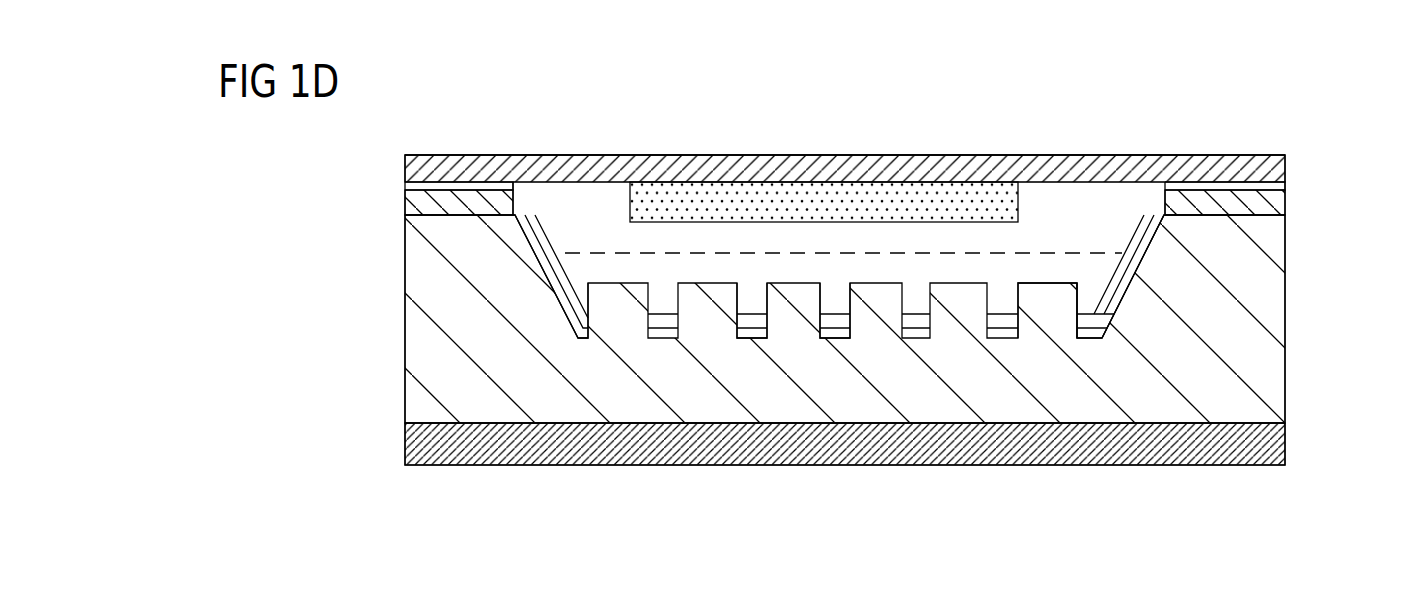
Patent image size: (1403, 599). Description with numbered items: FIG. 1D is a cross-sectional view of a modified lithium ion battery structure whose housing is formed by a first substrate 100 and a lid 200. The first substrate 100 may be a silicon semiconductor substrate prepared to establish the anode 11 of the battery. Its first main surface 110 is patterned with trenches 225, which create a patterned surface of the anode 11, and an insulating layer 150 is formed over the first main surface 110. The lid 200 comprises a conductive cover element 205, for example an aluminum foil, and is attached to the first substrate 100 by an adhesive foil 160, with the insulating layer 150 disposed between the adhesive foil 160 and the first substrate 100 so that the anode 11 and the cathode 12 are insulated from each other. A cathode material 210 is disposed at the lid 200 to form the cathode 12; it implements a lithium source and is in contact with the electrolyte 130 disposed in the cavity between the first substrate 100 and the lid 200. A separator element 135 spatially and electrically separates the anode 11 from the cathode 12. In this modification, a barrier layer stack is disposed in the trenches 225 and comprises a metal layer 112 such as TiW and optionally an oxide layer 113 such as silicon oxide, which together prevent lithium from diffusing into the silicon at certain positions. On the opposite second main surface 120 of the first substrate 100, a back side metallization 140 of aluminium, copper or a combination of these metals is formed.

The anode 11 is at (1137, 280).
The cathode 12 is at (1032, 183).
The first substrate 100 is at (1285, 313).
The first main surface 110 is at (1267, 215).
The metal layer 112 is at (665, 333).
The oxide layer 113 is at (652, 322).
The second main surface 120 is at (1267, 423).
The electrolyte 130 is at (751, 302).
The separator element 135 is at (1047, 255).
The back side metallization 140 is at (1270, 447).
The insulating layer 150 is at (1285, 208).
The adhesive foil 160 is at (1285, 182).
The lid 200 is at (1285, 158).
The conductive cover element 205 is at (463, 170).
The cathode material 210 is at (752, 197).
The trenches 225 is at (835, 305).